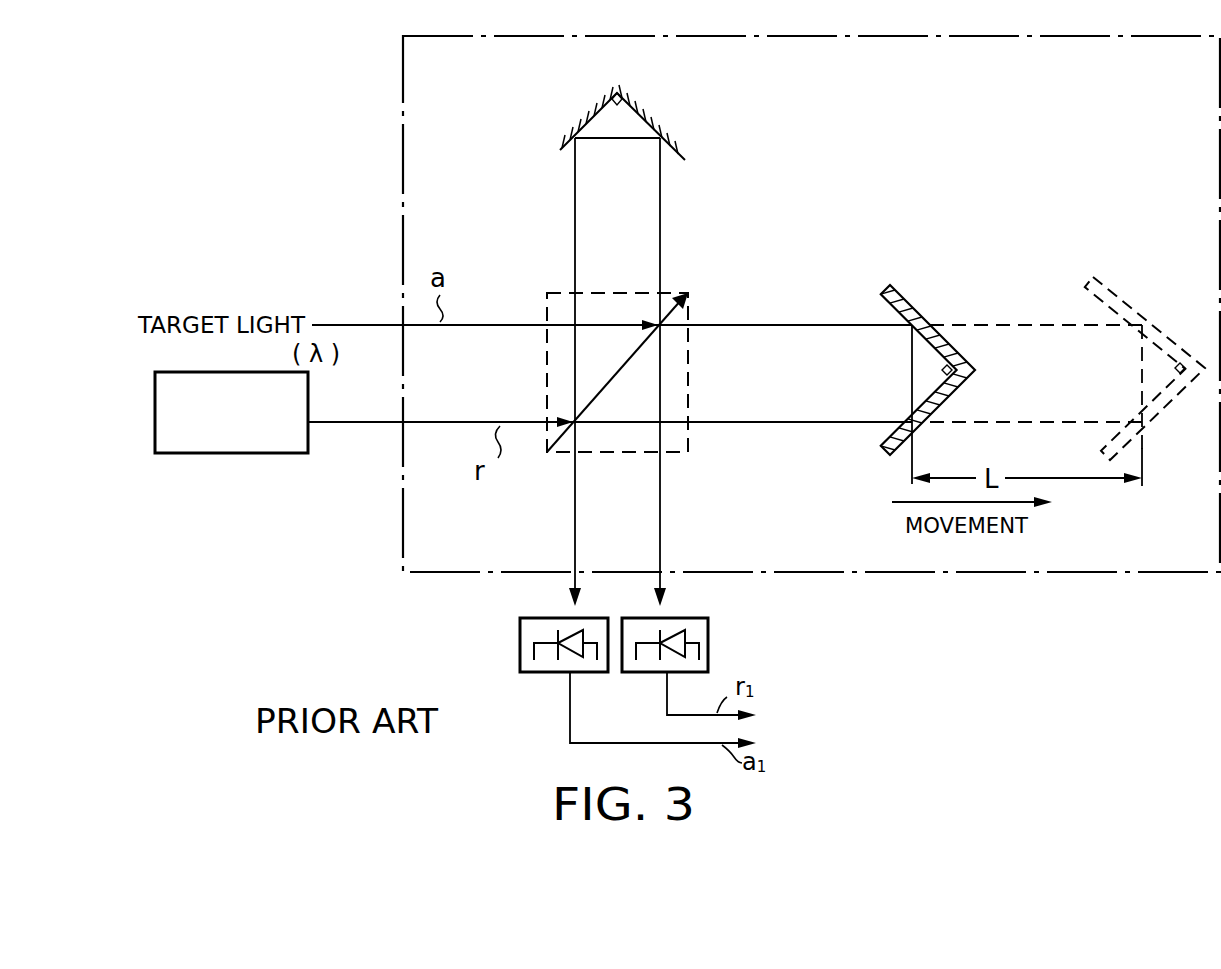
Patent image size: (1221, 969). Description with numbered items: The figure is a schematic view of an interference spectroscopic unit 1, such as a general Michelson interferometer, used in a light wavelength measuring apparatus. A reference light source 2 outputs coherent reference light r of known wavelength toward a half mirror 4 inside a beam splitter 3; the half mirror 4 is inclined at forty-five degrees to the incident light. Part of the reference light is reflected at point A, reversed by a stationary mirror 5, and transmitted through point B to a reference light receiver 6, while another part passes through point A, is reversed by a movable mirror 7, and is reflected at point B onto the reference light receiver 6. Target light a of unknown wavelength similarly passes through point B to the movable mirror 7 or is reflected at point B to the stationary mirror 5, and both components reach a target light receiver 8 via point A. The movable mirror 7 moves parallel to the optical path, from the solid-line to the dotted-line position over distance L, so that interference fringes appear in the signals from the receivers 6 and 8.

The interference spectroscopic unit 1 is at (402, 128).
The reference light source 2 is at (233, 454).
The beam splitter 3 is at (672, 290).
The half mirror 4 is at (628, 366).
The stationary mirror 5 is at (662, 110).
The reference light receiver 6 is at (708, 628).
The movable mirror 7 is at (928, 308).
The target light receiver 8 is at (520, 653).